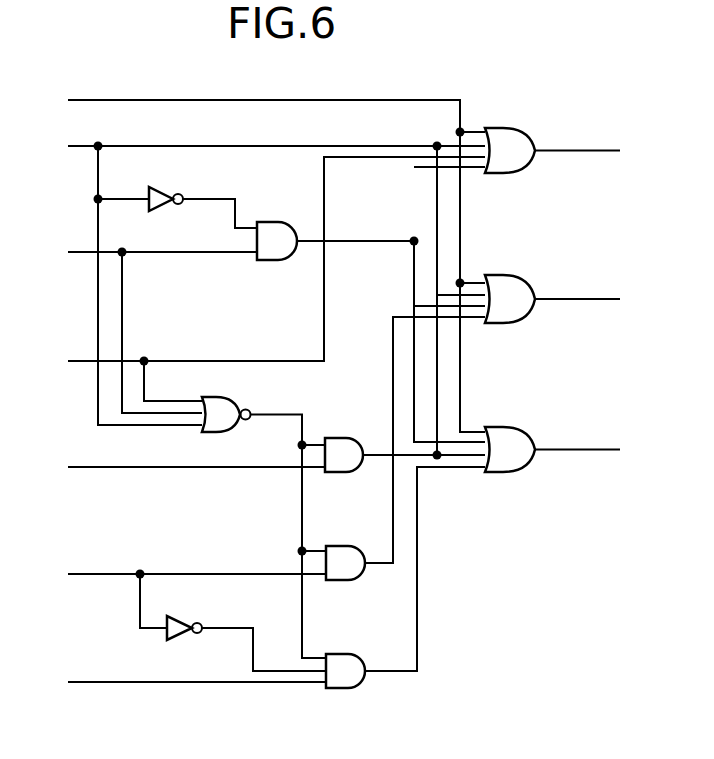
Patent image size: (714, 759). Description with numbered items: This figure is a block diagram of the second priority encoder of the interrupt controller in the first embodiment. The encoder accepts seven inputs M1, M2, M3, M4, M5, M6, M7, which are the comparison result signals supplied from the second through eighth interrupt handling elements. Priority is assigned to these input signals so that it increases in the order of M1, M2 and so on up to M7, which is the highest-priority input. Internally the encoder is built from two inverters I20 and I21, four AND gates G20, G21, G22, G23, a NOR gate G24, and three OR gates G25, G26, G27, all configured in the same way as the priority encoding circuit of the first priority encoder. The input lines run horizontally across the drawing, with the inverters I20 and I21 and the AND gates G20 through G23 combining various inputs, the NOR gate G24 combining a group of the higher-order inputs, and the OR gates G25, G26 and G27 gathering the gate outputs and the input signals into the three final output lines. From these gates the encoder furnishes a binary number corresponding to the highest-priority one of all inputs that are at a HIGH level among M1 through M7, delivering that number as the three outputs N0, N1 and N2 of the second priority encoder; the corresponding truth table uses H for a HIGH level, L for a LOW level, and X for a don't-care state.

The AND gate G20 is at (347, 653).
The AND gate G21 is at (347, 545).
The AND gate G22 is at (346, 437).
The AND gate G23 is at (279, 221).
The NOR gate G24 is at (264, 517).
The OR gate G25 is at (510, 426).
The OR gate G26 is at (509, 274).
The OR gate G27 is at (509, 127).
The inverter I20 is at (246, 631).
The inverter I21 is at (203, 197).
The input M1 is at (176, 682).
The input M2 is at (176, 594).
The input M3 is at (176, 467).
The input M4 is at (256, 279).
The input M5 is at (142, 326).
The input M6 is at (256, 293).
The input M7 is at (256, 259).
The output N0 is at (596, 449).
The output N1 is at (596, 299).
The output N2 is at (596, 150).